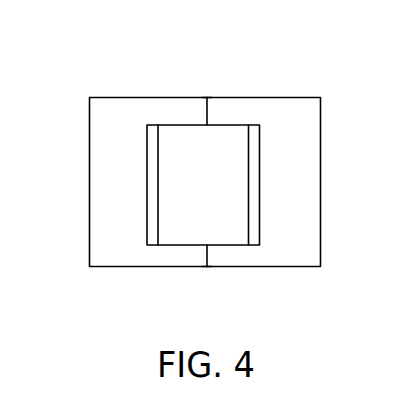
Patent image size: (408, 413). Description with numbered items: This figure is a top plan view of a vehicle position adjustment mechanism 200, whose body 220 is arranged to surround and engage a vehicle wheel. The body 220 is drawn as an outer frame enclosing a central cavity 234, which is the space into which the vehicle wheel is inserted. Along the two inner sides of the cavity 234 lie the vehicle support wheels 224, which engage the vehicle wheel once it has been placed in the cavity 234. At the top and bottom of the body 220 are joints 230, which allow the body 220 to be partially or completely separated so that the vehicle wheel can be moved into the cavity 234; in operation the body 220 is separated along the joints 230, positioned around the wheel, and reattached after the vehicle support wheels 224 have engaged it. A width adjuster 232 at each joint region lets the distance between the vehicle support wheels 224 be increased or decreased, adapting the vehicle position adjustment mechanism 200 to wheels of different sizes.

The vehicle position adjustment mechanism 200 is at (282, 90).
The body 220 is at (322, 183).
The vehicle support wheels 224 is at (159, 142).
The joints 230 is at (207, 120).
The width adjuster 232 is at (207, 104).
The cavity 234 is at (174, 193).